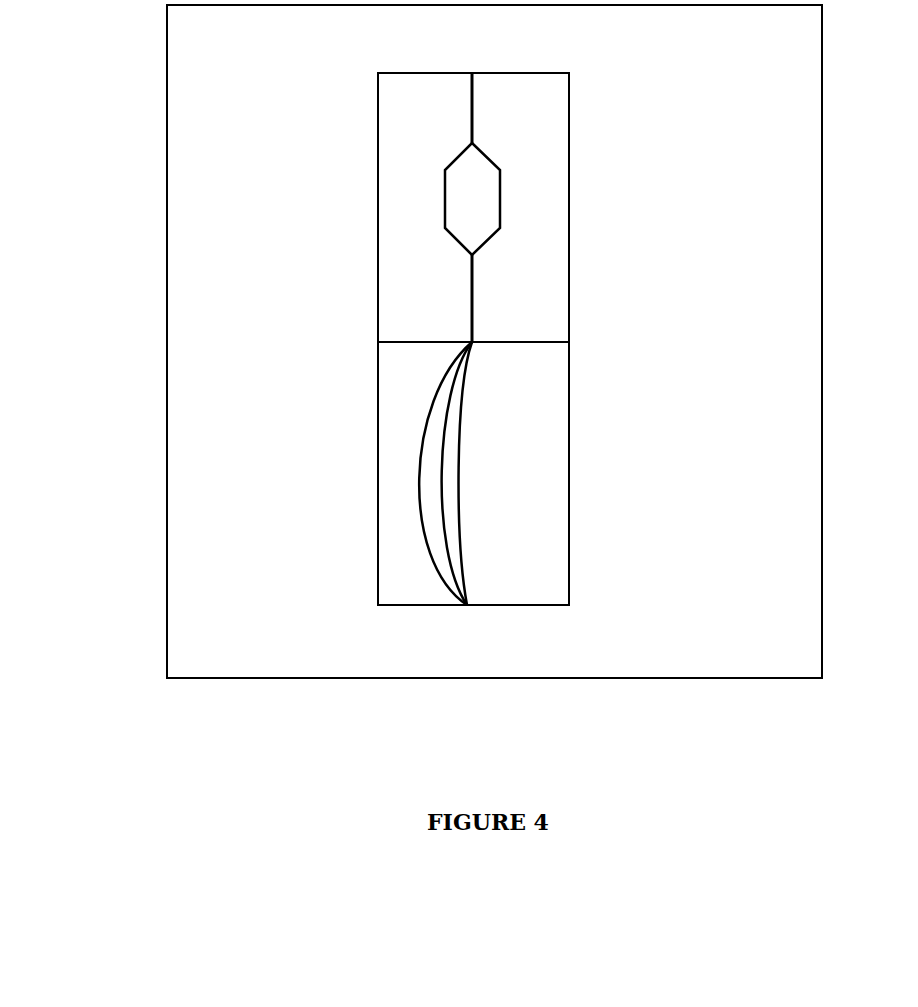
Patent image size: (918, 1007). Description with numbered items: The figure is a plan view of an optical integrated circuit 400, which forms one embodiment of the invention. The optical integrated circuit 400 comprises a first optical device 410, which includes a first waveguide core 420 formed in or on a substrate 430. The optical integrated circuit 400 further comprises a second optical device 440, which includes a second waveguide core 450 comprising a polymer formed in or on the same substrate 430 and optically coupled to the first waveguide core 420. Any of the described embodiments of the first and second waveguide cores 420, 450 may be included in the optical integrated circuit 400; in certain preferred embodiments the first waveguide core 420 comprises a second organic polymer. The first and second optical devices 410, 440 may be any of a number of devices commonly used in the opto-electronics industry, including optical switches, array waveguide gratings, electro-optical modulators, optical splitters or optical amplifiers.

The optical integrated circuit 400 is at (116, 249).
The first optical device 410 is at (431, 140).
The first waveguide core 420 is at (471, 103).
The substrate 430 is at (733, 176).
The second optical device 440 is at (543, 595).
The second waveguide core 450 is at (457, 448).